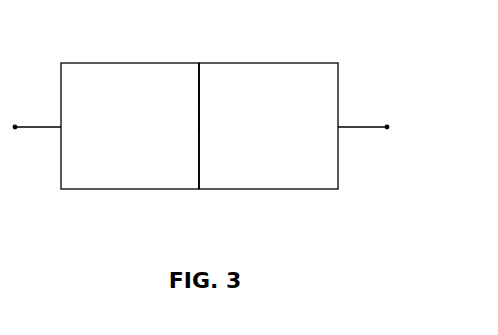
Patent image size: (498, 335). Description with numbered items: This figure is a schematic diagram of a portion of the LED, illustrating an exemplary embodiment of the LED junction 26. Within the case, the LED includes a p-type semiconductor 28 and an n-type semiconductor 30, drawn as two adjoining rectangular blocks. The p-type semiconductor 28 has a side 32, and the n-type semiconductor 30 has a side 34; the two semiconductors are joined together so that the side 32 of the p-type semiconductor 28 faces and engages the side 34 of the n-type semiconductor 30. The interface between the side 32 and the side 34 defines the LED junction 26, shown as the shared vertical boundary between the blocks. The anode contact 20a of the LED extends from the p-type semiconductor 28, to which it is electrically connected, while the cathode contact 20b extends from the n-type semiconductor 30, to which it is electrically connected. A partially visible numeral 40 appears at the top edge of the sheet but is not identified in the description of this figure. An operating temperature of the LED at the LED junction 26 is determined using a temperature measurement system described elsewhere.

The pressure sensor 40 is at (13, 3).
The p-type semiconductor 28 is at (130, 126).
The n-type semiconductor 30 is at (268, 126).
The LED junction 26 is at (198, 190).
The side 32 is at (198, 93).
The side 34 is at (200, 120).
The anode contact 20a is at (16, 128).
The cathode contact 20b is at (386, 128).